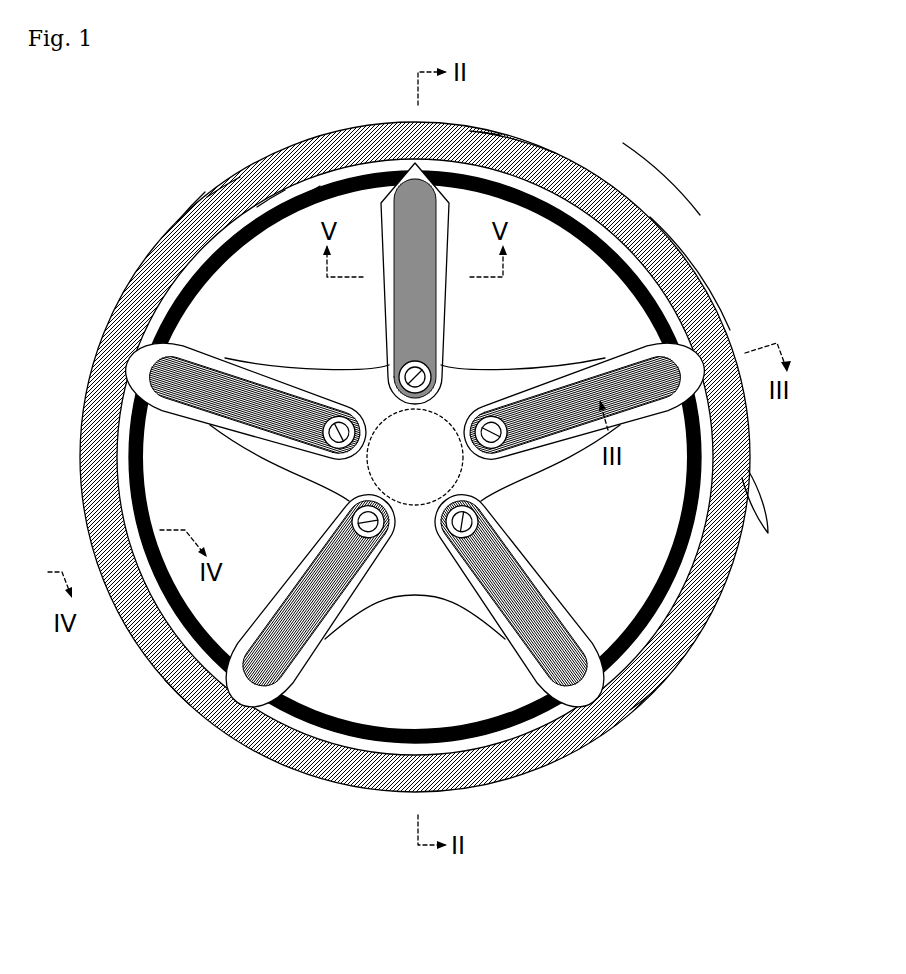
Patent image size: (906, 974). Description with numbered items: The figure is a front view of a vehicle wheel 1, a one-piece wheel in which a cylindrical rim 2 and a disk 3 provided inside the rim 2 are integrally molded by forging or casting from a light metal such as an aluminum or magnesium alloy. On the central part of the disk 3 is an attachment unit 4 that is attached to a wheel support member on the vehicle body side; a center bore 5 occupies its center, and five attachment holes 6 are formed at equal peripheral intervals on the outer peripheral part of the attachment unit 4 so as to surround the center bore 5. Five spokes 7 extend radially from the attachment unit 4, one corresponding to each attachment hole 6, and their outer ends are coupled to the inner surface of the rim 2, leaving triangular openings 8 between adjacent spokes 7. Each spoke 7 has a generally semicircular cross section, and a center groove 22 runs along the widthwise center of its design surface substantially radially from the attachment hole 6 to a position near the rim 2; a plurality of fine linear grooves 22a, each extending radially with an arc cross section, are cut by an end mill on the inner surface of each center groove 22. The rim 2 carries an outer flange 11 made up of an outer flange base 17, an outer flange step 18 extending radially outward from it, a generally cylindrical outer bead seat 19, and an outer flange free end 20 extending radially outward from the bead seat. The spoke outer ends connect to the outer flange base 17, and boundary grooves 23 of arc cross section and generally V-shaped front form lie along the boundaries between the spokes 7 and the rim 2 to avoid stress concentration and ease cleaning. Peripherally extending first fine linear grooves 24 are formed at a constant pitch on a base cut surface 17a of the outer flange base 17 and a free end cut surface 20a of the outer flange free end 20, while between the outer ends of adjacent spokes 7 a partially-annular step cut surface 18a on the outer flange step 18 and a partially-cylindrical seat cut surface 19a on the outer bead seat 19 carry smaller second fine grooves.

The vehicle wheel 1 is at (625, 141).
The rim 2 is at (652, 215).
The disk 3 is at (584, 266).
The attachment unit 4 is at (355, 378).
The center bore 5 is at (383, 475).
The attachment holes 6 is at (490, 425).
The spokes 7 is at (385, 240).
The openings 8 is at (170, 516).
The outer flange 11 is at (557, 151).
The outer flange base 17 is at (138, 405).
The base cut surface 17a is at (297, 200).
The outer flange step 18 is at (118, 440).
The step cut surface 18a is at (257, 207).
The outer bead seat 19 is at (100, 470).
The seat cut surface 19a is at (207, 197).
The outer flange free end 20 is at (83, 510).
The free end cut surface 20a is at (177, 222).
The center grooves 22 is at (233, 377).
The fine linear grooves 22a is at (243, 393).
The boundary grooves 23 is at (480, 132).
The first fine linear grooves 24 is at (757, 487).